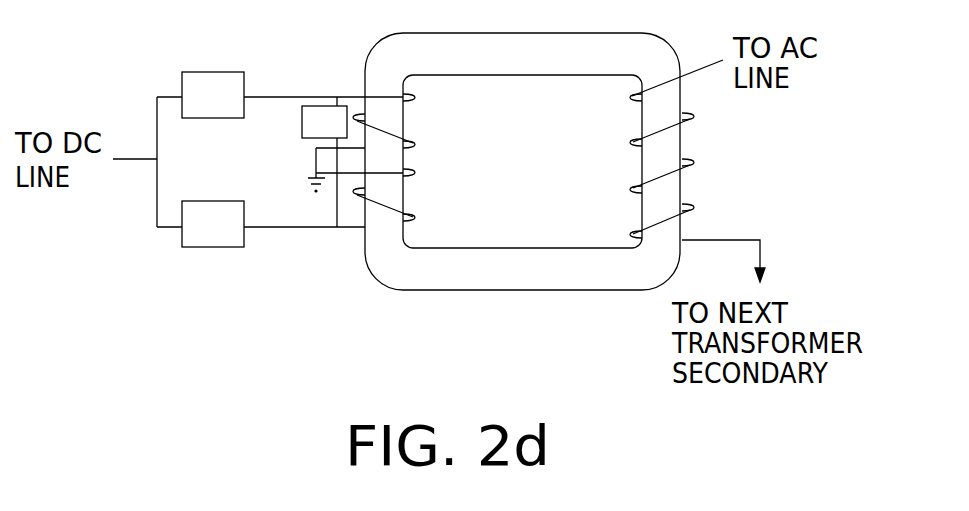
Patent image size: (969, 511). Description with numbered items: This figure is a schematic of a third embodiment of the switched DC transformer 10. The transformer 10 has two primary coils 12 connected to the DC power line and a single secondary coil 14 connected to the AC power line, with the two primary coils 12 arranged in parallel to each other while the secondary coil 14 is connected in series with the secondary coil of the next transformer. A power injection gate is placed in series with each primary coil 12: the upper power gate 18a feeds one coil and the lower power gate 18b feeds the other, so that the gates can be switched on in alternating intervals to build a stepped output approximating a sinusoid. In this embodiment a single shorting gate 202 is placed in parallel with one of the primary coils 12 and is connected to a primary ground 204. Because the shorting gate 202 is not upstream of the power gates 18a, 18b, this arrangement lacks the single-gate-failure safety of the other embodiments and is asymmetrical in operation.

The switched DC transformer 10 is at (508, 321).
The primary coil 12 is at (413, 101).
The secondary coil 14 is at (690, 118).
The upper power gate 18a is at (203, 72).
The lower power gate 18b is at (213, 247).
The shorting gate 202 is at (300, 127).
The primary ground 204 is at (290, 168).